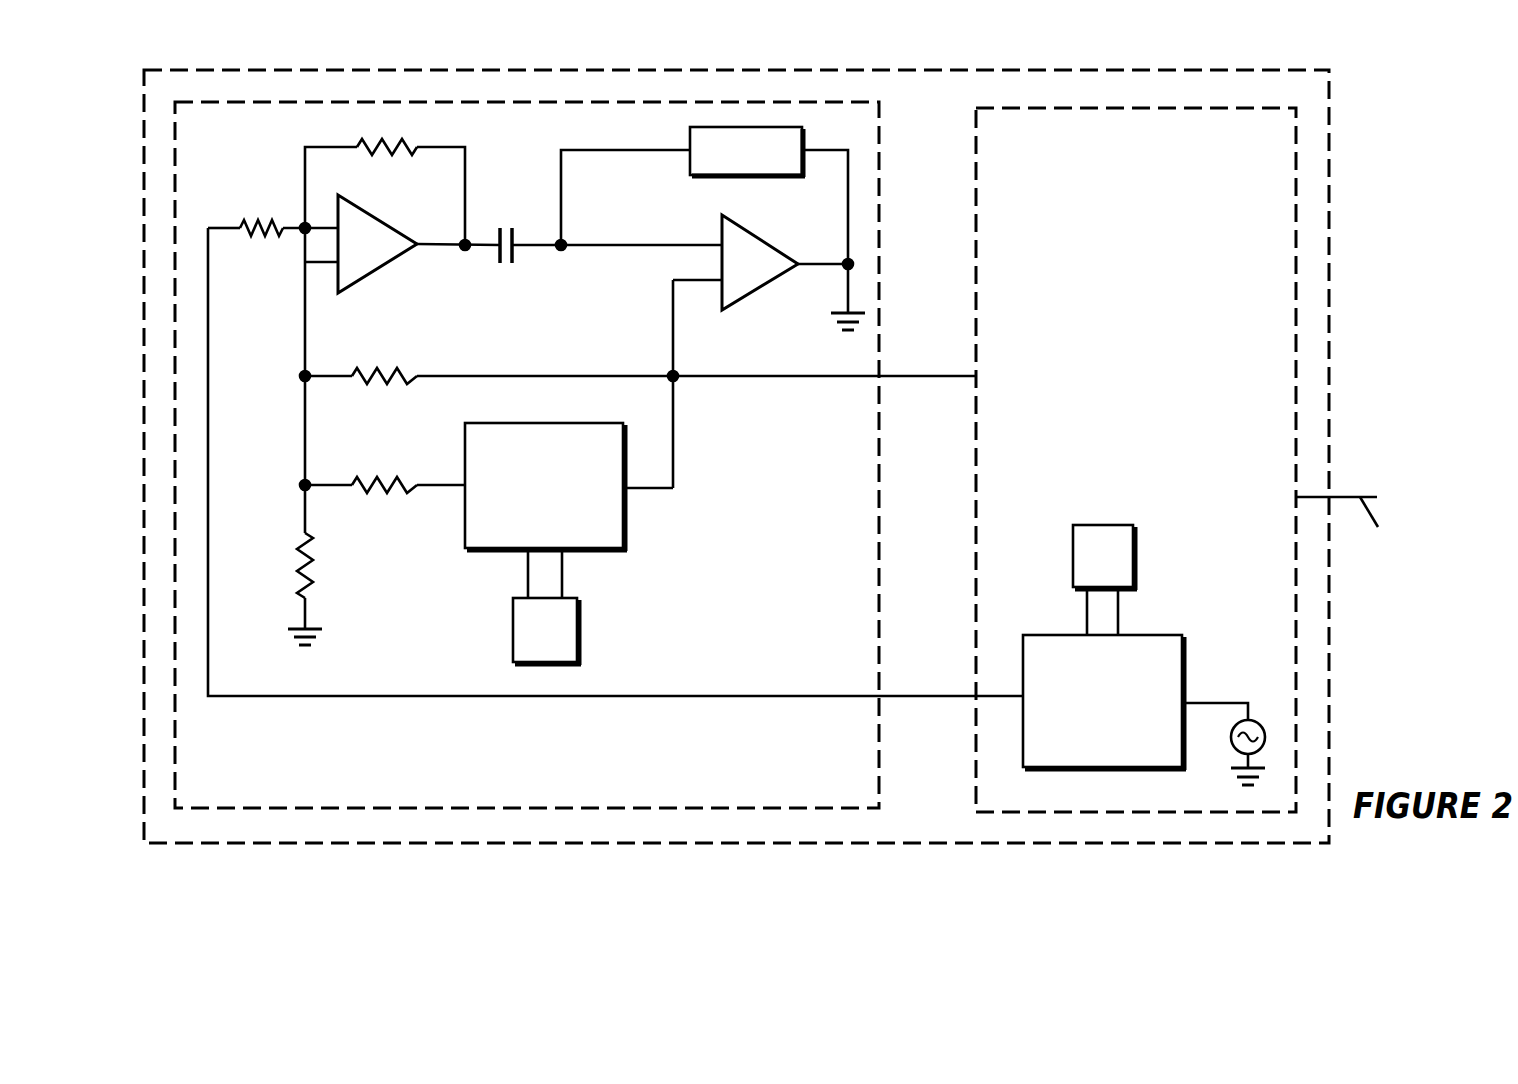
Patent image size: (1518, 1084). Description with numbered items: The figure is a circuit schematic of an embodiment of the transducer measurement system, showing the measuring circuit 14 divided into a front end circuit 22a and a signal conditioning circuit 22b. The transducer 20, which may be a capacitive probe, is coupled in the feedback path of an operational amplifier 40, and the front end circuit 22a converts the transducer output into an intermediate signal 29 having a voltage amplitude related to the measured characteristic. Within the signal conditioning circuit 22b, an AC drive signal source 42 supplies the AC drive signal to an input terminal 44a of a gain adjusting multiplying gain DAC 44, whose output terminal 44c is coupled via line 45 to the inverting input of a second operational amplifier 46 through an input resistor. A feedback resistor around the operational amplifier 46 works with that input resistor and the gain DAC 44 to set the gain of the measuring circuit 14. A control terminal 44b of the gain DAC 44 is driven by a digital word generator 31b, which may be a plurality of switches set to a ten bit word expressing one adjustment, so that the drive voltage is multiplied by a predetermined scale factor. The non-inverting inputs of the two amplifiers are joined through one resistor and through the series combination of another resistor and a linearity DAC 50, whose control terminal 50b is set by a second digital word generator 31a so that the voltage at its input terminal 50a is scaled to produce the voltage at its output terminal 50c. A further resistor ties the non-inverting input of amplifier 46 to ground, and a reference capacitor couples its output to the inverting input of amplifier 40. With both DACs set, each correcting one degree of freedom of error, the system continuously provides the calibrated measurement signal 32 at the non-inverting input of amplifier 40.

The measuring circuit 14 is at (355, 70).
The front end circuit 22a is at (628, 101).
The signal conditioning circuit 22b is at (1100, 108).
The transducer 20 is at (716, 177).
The operational amplifier 40 is at (763, 239).
The operational amplifier 46 is at (368, 210).
The intermediate signal 29 is at (925, 377).
The linearity DAC 50 is at (528, 423).
The input terminal of linearity DAC 50a is at (628, 492).
The control terminal of linearity DAC 50b is at (566, 556).
The output terminal of linearity DAC 50c is at (460, 488).
The digital word generator 31a is at (580, 627).
The digital word generator 31b is at (1138, 536).
The line 45 is at (910, 695).
The gain DAC 44 is at (1070, 771).
The input terminal of gain DAC 44a is at (1185, 697).
The control terminal of gain DAC 44b is at (1120, 633).
The output terminal of gain DAC 44c is at (1020, 697).
The AC drive signal source 42 is at (1258, 723).
The calibrated measurement signal 32 is at (1345, 497).